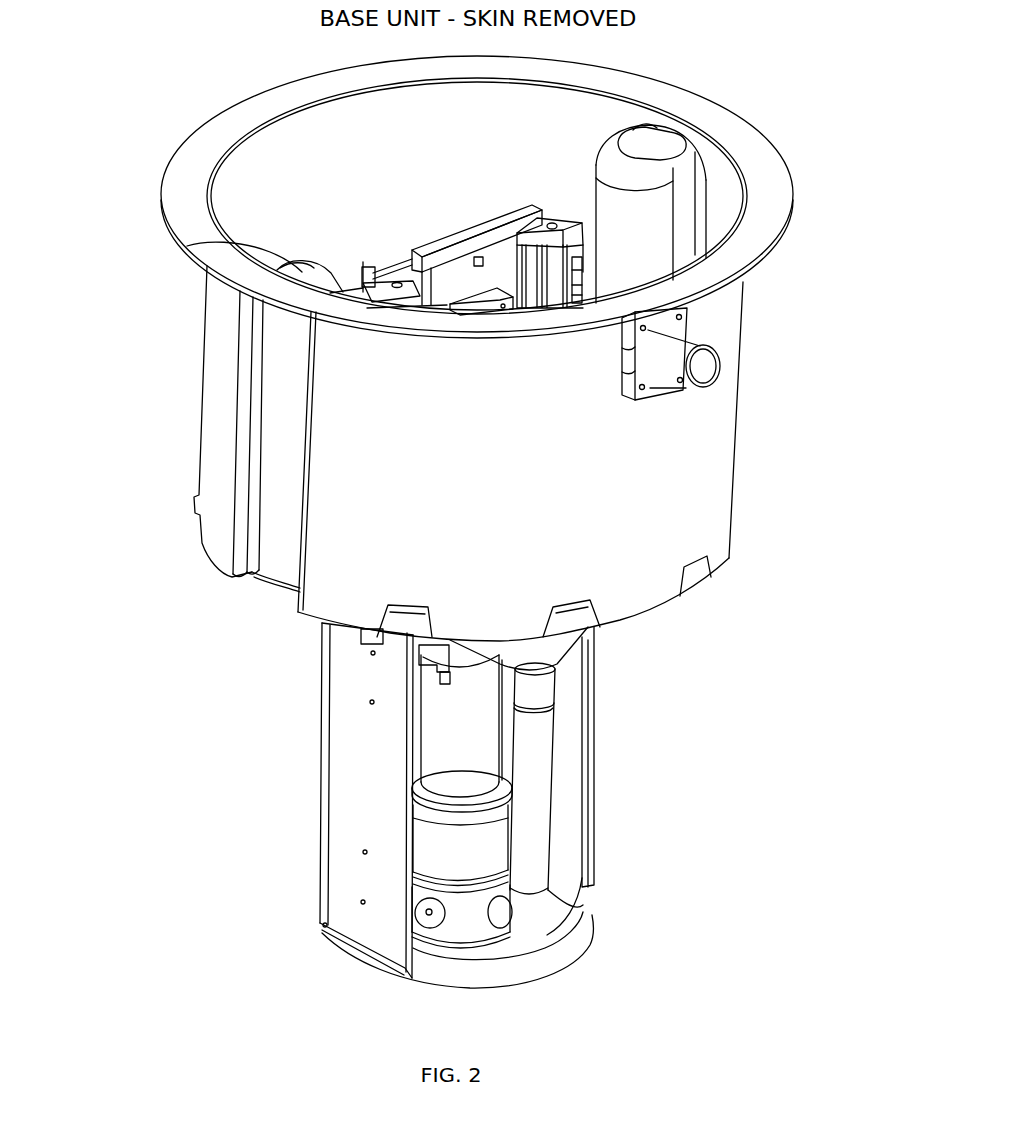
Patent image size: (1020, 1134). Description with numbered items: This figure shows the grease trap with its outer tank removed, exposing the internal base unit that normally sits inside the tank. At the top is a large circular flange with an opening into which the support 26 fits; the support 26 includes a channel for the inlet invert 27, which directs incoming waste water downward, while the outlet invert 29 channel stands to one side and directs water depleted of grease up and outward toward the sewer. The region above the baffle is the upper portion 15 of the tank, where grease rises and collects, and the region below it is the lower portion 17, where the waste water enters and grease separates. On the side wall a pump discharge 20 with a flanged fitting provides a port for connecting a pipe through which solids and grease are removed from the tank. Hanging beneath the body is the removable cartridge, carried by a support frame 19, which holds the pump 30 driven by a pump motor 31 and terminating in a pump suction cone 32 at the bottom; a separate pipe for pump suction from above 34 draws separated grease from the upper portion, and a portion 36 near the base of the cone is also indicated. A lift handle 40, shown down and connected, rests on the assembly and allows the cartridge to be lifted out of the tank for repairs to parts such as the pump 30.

The upper portion 15 is at (535, 134).
The lower portion 17 is at (715, 581).
The support frame 19 is at (357, 722).
The pump discharge 20 is at (707, 387).
The support 26 is at (221, 443).
The inlet invert 27 is at (187, 246).
The outlet invert 29 is at (653, 150).
The pump 30 is at (447, 850).
The pump motor 31 is at (450, 750).
The pump suction cone 32 is at (363, 969).
The pump suction from above (grease) 34 is at (558, 750).
The suction inlet 36 is at (560, 893).
The handle 40 is at (423, 243).